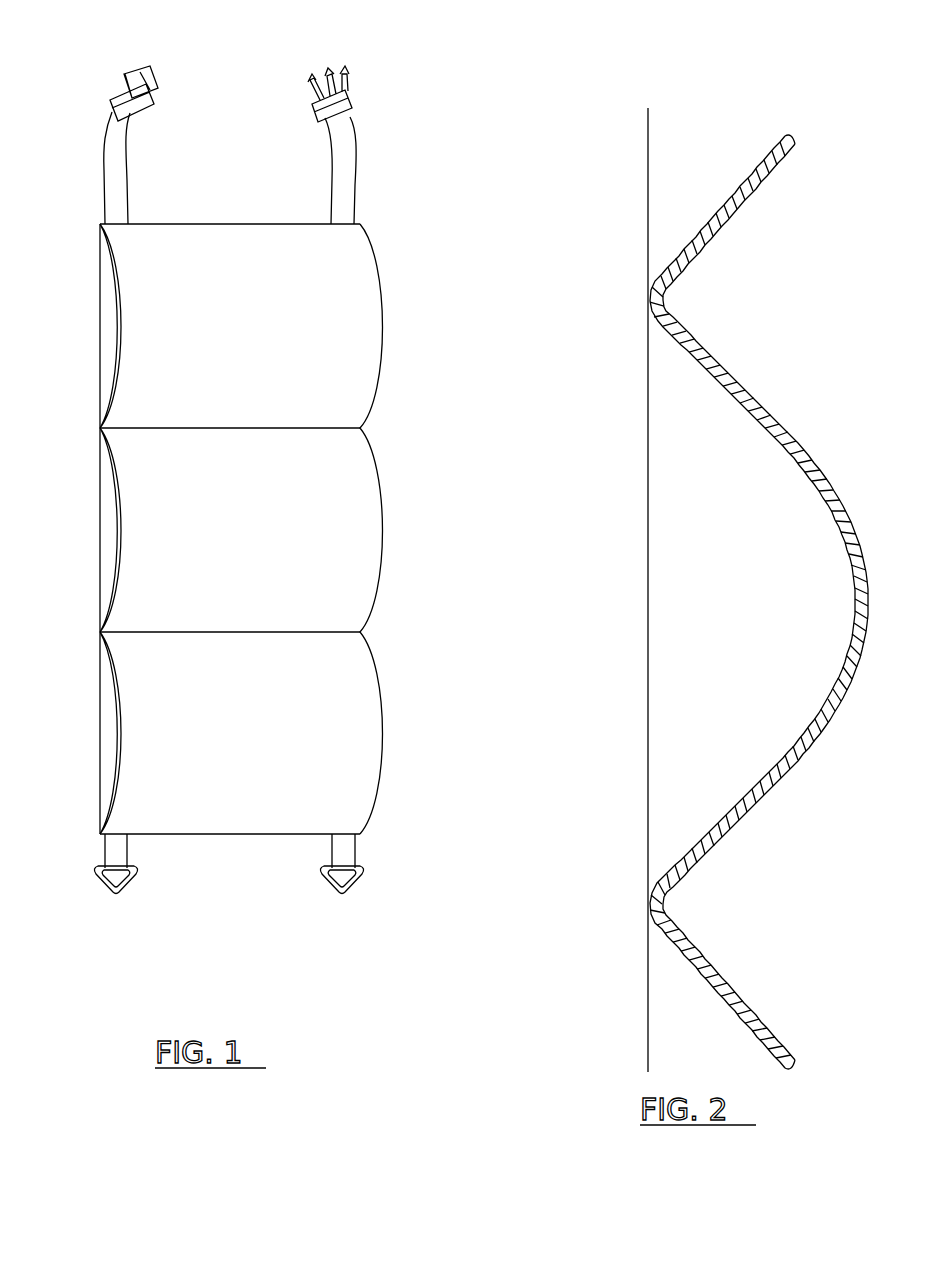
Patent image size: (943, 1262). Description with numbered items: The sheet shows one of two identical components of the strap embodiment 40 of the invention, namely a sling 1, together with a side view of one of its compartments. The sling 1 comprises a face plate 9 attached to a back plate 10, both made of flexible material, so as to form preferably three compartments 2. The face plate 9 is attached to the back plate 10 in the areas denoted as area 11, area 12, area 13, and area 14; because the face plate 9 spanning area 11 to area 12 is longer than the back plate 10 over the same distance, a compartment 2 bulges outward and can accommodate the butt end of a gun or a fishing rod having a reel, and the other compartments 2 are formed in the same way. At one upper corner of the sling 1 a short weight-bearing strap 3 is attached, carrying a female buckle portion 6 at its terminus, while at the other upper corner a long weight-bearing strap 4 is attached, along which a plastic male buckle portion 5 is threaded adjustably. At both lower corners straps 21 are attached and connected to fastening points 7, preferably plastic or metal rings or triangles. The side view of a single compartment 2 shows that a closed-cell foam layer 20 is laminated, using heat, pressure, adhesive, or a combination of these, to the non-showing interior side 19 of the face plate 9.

In FIG. 1, the sling 1 is at (467, 838).
In FIG. 1, the compartment 2 is at (110, 325).
In FIG. 2, the compartment 2 is at (712, 646).
In FIG. 1, the short weight-bearing strap 3 is at (125, 178).
In FIG. 1, the long weight-bearing strap 4 is at (353, 164).
In FIG. 1, the plastic male buckle portion 5 is at (343, 92).
In FIG. 1, the female buckle portion 6 is at (136, 80).
In FIG. 1, the fastening point 7 is at (128, 880).
In FIG. 1, the face plate 9 is at (365, 295).
In FIG. 2, the face plate 9 is at (805, 432).
In FIG. 1, the back plate 10 is at (100, 383).
In FIG. 1, the area 11 is at (252, 223).
In FIG. 1, the area 12 is at (362, 428).
In FIG. 1, the area 13 is at (362, 633).
In FIG. 1, the area 14 is at (293, 835).
In FIG. 2, the non-facing interior side 19 is at (838, 512).
In FIG. 2, the closed-cell foam layer 20 is at (838, 698).
In FIG. 1, the strap 21 is at (105, 848).
In FIG. 1, the strap embodiment 40 is at (484, 96).